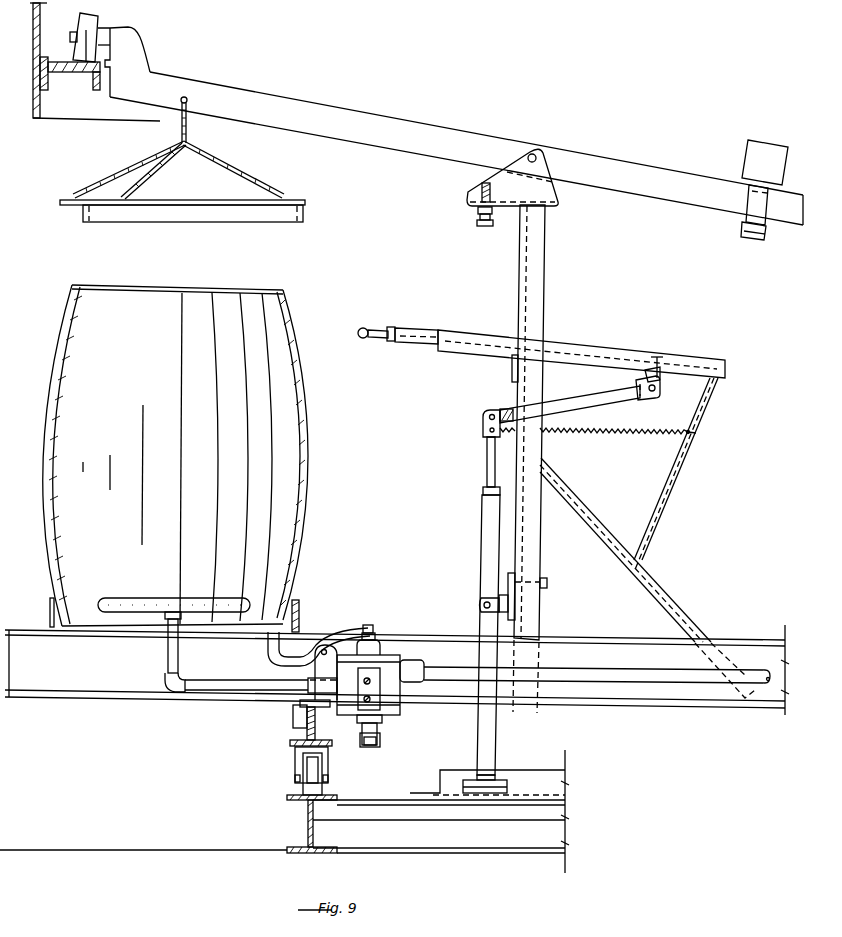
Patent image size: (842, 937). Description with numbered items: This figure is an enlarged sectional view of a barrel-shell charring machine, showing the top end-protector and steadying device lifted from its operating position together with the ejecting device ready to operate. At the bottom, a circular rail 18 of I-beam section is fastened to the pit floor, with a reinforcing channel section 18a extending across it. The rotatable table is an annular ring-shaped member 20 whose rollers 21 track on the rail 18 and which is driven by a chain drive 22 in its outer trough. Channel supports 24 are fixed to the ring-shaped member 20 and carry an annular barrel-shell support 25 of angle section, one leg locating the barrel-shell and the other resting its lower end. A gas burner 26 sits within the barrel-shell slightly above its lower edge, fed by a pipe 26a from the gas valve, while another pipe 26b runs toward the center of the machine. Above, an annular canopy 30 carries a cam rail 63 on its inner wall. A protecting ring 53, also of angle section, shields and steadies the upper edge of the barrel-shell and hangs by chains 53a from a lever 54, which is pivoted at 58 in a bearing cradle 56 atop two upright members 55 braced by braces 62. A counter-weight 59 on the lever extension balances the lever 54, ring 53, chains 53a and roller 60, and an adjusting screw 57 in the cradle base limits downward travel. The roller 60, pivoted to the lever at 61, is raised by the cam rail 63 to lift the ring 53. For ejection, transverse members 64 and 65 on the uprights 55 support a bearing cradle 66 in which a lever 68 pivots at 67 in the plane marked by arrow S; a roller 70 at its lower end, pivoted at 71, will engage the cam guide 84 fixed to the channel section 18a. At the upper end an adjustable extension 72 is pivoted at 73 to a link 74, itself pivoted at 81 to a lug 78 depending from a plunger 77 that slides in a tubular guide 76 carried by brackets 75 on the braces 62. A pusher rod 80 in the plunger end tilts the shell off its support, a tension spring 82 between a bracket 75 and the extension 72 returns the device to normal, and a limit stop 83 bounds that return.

The circular rail 18 is at (292, 797).
The reinforcing channel section 18a is at (543, 826).
The annular ring-shaped member 20 is at (292, 743).
The casters or rollers 21 is at (295, 766).
The chain drive 22 is at (295, 722).
The channel supports 24 is at (598, 641).
The annular barrel-shell support 25 is at (300, 613).
The gas burner 26 is at (211, 600).
The pipe 26a is at (232, 652).
The pipe 26b is at (618, 672).
The annular canopy 30 is at (40, 42).
The protecting ring 53 is at (318, 183).
The chains 53a is at (88, 187).
The lever 54 is at (353, 110).
The upright members 55 is at (545, 325).
The bearing cradle 56 is at (558, 192).
The adjusting screw 57 is at (480, 224).
The pivotal connection 58 is at (537, 152).
The counter-weight 59 is at (752, 159).
The roller 60 is at (98, 15).
The roller pivot 61 is at (71, 35).
The braces 62 is at (655, 578).
The cam rail 63 is at (85, 72).
The transverse member 64 is at (520, 613).
The transverse member 65 is at (511, 368).
The bearing cradle 66 is at (482, 600).
The pivot 67 is at (481, 608).
The lever 68 is at (484, 553).
The roller 70 is at (498, 780).
The roller pivot 71 is at (483, 794).
The adjustable extension 72 is at (485, 464).
The pivot 73 is at (483, 415).
The link 74 is at (548, 402).
The brackets 75 is at (677, 492).
The tubular guide 76 is at (710, 358).
The plunger 77 is at (417, 330).
The lug 78 is at (658, 376).
The pusher rod 80 is at (366, 327).
The pivot 81 is at (644, 396).
The tension spring 82 is at (650, 437).
The adjusting screw or limit stop 83 is at (545, 580).
The cam guide 84 is at (550, 770).
The arrow S is at (472, 512).